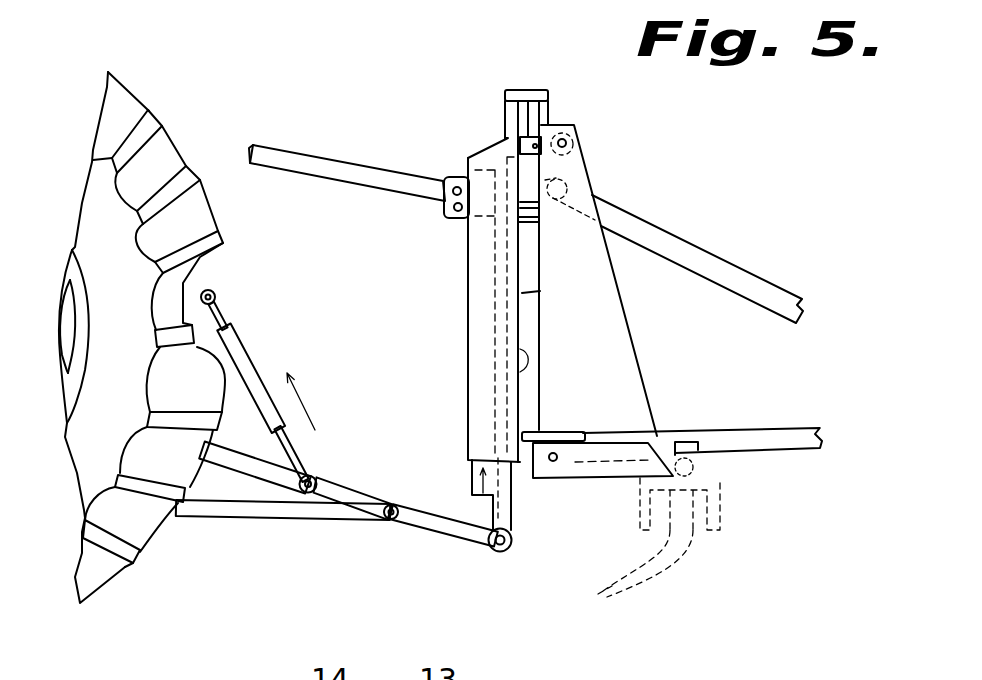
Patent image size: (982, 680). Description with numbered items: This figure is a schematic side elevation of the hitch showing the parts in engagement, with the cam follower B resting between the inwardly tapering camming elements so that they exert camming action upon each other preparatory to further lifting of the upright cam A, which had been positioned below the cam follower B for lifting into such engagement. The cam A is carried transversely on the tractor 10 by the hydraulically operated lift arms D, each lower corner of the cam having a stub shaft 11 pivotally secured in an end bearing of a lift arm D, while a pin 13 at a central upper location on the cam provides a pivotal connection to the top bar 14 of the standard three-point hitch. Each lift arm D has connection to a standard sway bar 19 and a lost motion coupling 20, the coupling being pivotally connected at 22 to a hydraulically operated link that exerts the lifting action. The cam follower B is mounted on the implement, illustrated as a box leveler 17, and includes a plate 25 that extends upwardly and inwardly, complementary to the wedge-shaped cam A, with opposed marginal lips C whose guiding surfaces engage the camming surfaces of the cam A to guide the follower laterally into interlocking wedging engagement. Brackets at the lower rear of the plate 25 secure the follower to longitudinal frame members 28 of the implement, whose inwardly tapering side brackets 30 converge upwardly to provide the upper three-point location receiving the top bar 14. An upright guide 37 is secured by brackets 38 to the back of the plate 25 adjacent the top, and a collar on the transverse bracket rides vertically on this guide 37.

The tractor 10 is at (129, 584).
The stub shaft 11 is at (502, 553).
The pin 13 is at (447, 178).
The top bar 14 is at (307, 157).
The box leveler 17 is at (781, 264).
The sway bar 19 is at (255, 508).
The lost motion coupling 20 is at (252, 373).
The pivotal connection 22 is at (213, 293).
The plate 25 is at (522, 293).
The longitudinal frame member 28 is at (758, 433).
The side bracket 30 is at (633, 350).
The upright guide 37 is at (546, 113).
The bracket 38 is at (522, 90).
The upright cam A is at (520, 493).
The cam follower B is at (520, 352).
The lip C is at (473, 400).
The hydraulic lift arm D is at (420, 532).